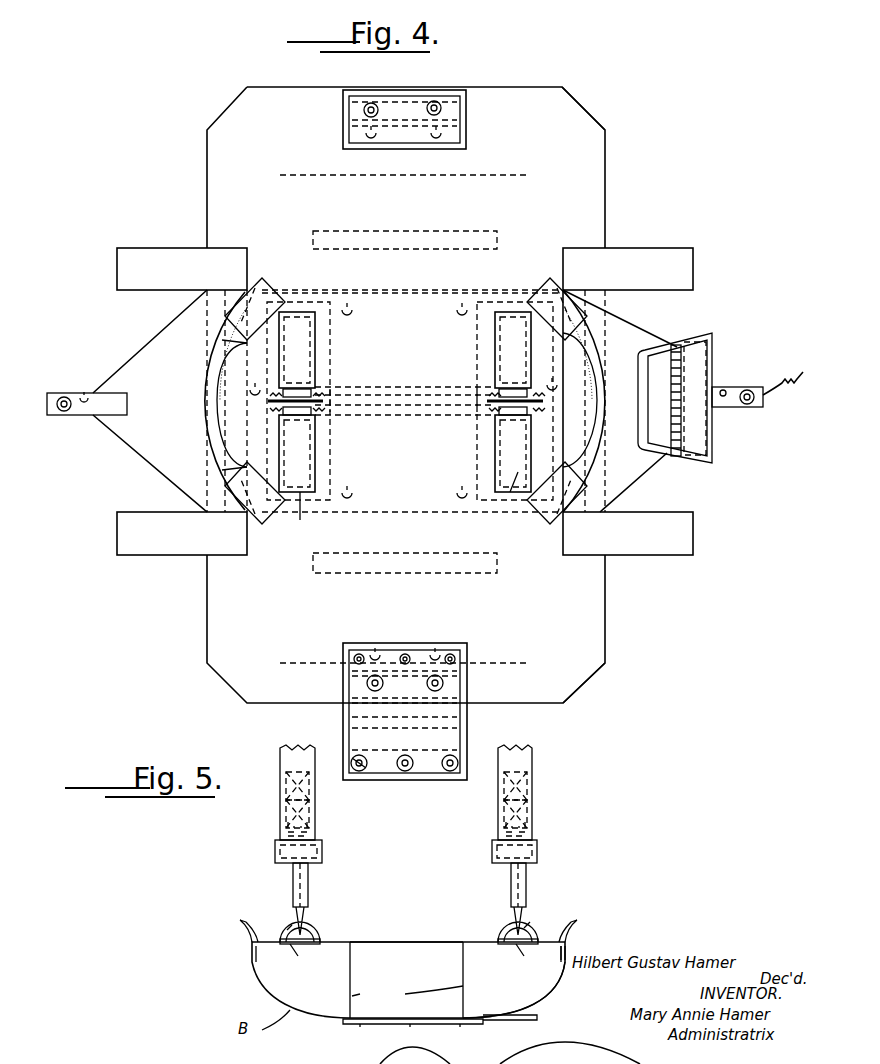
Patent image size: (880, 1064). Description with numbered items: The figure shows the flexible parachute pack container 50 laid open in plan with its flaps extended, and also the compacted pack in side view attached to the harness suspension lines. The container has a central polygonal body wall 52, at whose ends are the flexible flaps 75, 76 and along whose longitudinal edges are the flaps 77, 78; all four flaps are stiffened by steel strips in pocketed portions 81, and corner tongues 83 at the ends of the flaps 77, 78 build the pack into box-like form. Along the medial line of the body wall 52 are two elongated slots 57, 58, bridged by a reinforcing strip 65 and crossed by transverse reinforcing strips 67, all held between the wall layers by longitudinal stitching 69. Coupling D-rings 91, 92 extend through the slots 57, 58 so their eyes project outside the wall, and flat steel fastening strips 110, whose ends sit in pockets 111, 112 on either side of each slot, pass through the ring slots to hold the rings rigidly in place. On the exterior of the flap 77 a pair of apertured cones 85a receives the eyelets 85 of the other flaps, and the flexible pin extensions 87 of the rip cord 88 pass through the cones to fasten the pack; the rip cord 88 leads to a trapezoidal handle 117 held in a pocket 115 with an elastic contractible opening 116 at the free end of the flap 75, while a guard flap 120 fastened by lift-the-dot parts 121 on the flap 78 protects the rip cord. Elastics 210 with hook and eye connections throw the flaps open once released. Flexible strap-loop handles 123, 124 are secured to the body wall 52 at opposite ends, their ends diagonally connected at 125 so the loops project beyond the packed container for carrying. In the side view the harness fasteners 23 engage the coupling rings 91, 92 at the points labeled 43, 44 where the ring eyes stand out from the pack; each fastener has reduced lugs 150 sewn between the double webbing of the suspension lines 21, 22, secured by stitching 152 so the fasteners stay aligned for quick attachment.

In FIG. 4, the flexible container 50 is at (581, 211).
In FIG. 5, the flexible container 50 is at (392, 962).
In FIG. 4, the body portion or back 52 is at (405, 292).
In FIG. 5, the body portion or back 52 is at (418, 942).
In FIG. 4, the flexible flap 77 is at (563, 100).
In FIG. 4, the flexible flap 78 is at (580, 680).
In FIG. 5, the flexible flap 78 is at (520, 988).
In FIG. 4, the corner tongues 83 is at (168, 240).
In FIG. 4, the pocketed portions 81 is at (462, 228).
In FIG. 4, the transversely apertured cones 85a is at (437, 101).
In FIG. 4, the eyelets 85 is at (66, 412).
In FIG. 4, the flexible flap 76 is at (130, 438).
In FIG. 4, the flexible handle or strap loop 123 is at (212, 402).
In FIG. 5, the flexible handle or strap loop 123 is at (250, 940).
In FIG. 4, the flexible handle or strap loop 124 is at (590, 338).
In FIG. 5, the flexible handle or strap loop 124 is at (572, 930).
In FIG. 4, the diagonal connection 125 is at (268, 300).
In FIG. 4, the pocket 112 is at (300, 322).
In FIG. 4, the D-ring or loop 92 is at (300, 418).
In FIG. 5, the D-ring or loop 92 is at (316, 920).
In FIG. 4, the D-ring or loop 91 is at (519, 416).
In FIG. 5, the D-ring or loop 91 is at (536, 926).
In FIG. 4, the steel fastening strips 110 is at (297, 390).
In FIG. 4, the pocket 111 is at (300, 500).
In FIG. 5, the pocket 111 is at (292, 946).
In FIG. 4, the elongated slot 57 is at (331, 399).
In FIG. 4, the elongated slot 58 is at (500, 410).
In FIG. 4, the reinforcing strip 65 is at (385, 386).
In FIG. 4, the transverse reinforcing strips 67 is at (332, 342).
In FIG. 4, the stitching 69 is at (340, 292).
In FIG. 4, the flexible flap 75 is at (622, 314).
In FIG. 4, the rip cord handle 117 is at (642, 380).
In FIG. 5, the rip cord handle 117 is at (540, 1022).
In FIG. 4, the elastic contractible opening 116 is at (675, 408).
In FIG. 4, the pocket 115 is at (695, 442).
In FIG. 5, the pocket 115 is at (495, 1022).
In FIG. 4, the rip cord 88 is at (740, 388).
In FIG. 4, the flexible pin extensions 87 is at (797, 378).
In FIG. 4, the guard flap 120 is at (390, 738).
In FIG. 5, the guard flap 120 is at (382, 1028).
In FIG. 4, the fastener parts 121 is at (352, 758).
In FIG. 5, the suspension line 21 is at (297, 745).
In FIG. 5, the suspension line 22 is at (523, 760).
In FIG. 5, the stitching 152 is at (284, 808).
In FIG. 5, the reduced lugs 150 is at (312, 822).
In FIG. 5, the fasteners 23 is at (312, 862).
In FIG. 5, the left pivot 44 is at (287, 930).
In FIG. 5, the right pivot 43 is at (530, 922).
In FIG. 5, the elastics 210 is at (355, 998).